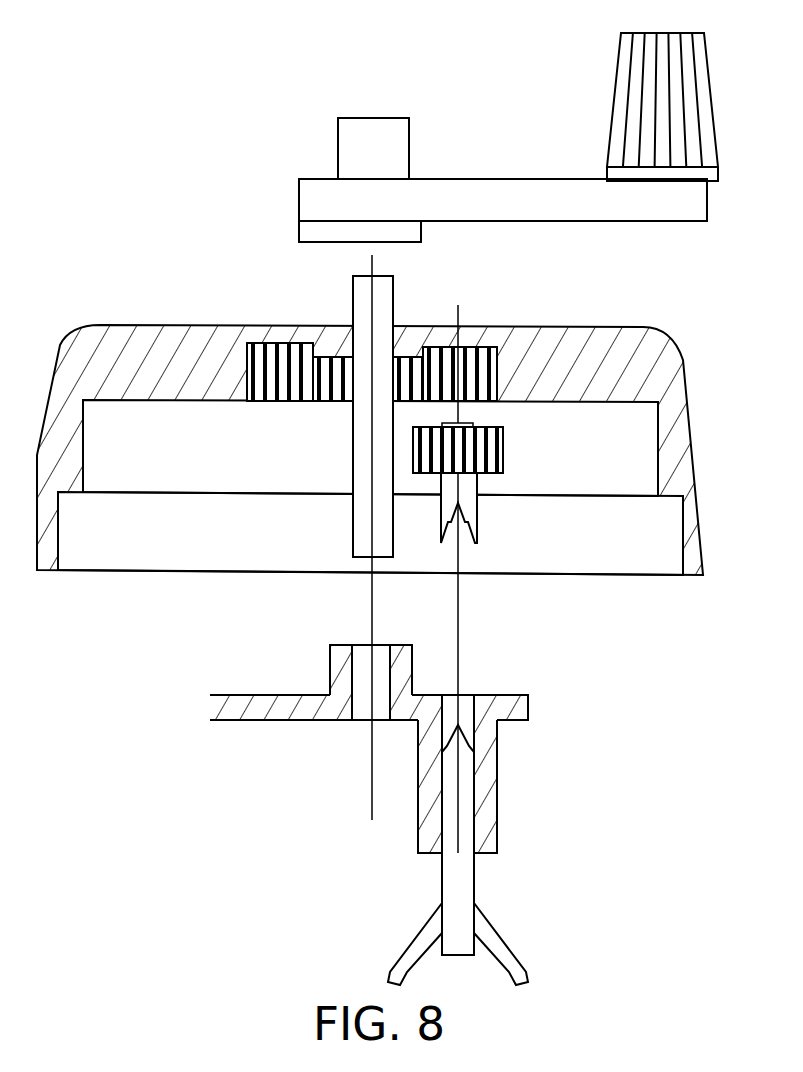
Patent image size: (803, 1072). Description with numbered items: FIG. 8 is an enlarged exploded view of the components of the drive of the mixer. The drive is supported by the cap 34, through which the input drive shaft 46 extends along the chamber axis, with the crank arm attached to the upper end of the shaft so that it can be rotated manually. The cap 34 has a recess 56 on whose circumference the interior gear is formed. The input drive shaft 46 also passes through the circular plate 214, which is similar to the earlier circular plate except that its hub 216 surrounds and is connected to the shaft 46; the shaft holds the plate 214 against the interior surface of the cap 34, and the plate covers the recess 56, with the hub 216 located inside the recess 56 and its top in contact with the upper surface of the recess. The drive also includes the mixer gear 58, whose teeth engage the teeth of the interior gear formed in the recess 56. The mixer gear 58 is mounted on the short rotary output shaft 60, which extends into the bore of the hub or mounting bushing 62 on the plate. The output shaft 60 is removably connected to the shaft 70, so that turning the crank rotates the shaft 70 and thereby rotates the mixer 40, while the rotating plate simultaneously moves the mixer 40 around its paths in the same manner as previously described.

The cap 34 is at (66, 323).
The input drive shaft 46 is at (354, 288).
The recess 56 is at (247, 370).
The mixer gear 58 is at (493, 451).
The rotary output shaft 60 is at (468, 508).
The mounting bushing 62 is at (485, 773).
The shaft 70 is at (458, 890).
The mixer 40 is at (405, 941).
The circular plate 214 is at (224, 721).
The hub 216 is at (412, 683).